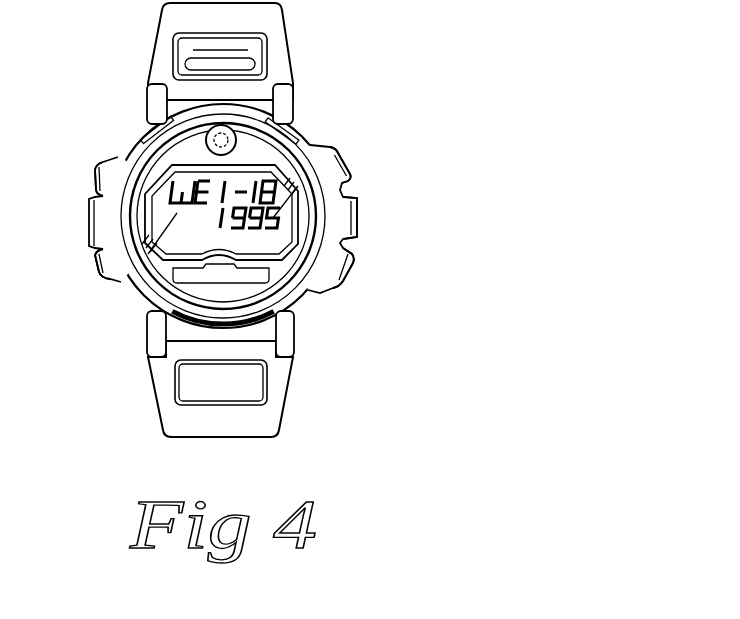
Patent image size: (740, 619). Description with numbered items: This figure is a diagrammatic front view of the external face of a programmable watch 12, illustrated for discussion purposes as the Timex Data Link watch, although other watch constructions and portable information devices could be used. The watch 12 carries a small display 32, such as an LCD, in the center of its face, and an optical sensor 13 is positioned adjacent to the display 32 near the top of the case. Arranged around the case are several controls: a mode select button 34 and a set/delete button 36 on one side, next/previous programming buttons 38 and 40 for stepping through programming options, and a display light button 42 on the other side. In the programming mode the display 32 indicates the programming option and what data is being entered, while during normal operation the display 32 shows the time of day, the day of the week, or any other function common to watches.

The programmable watch 12 is at (425, 40).
The optical sensor 13 is at (237, 137).
The display 32 is at (216, 182).
The mode select button 34 is at (357, 222).
The set/delete button 36 is at (348, 281).
The next/previous programming button 38 is at (349, 165).
The next/previous programming button 40 is at (93, 274).
The display light button 42 is at (92, 172).